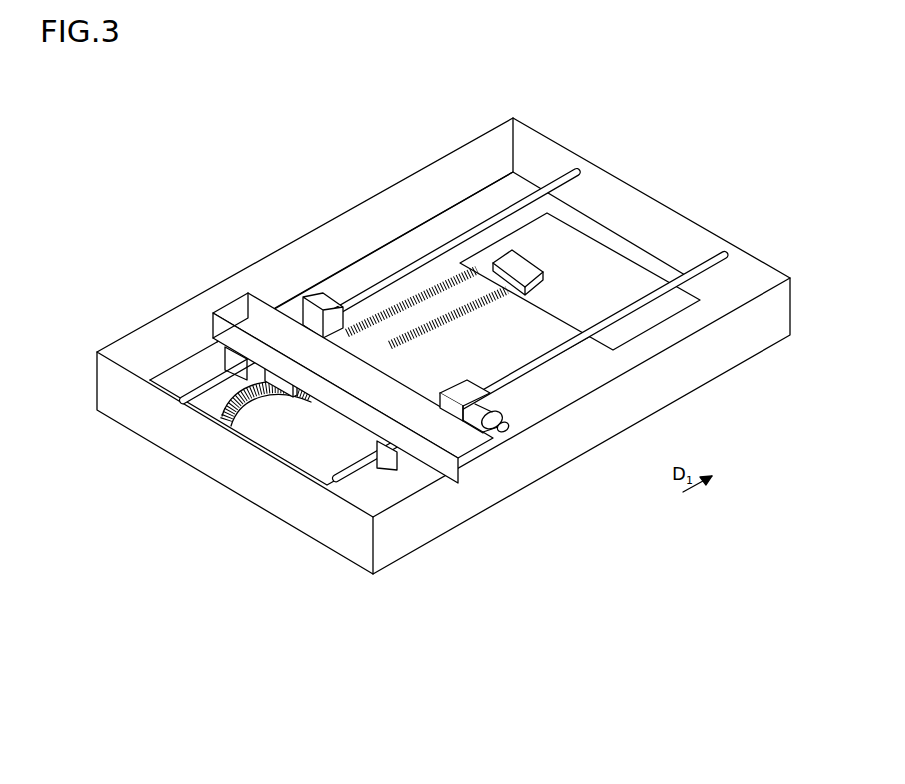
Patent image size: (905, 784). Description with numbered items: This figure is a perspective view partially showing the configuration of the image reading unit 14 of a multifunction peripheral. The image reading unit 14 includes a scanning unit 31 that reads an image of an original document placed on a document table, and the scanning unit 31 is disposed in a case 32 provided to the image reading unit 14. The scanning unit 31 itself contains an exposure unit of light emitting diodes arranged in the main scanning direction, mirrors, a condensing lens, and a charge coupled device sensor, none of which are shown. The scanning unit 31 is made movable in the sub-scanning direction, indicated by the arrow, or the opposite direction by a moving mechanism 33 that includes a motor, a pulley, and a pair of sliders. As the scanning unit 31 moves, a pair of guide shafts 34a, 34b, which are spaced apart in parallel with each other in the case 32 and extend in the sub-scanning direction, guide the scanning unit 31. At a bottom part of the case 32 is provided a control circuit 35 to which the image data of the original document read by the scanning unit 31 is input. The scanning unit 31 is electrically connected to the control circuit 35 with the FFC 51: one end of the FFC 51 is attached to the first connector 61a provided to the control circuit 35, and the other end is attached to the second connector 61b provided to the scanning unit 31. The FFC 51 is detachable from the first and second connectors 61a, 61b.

The image reading unit 14 is at (742, 149).
The scanning unit 31 is at (347, 403).
The case 32 is at (433, 517).
The moving mechanism 33 is at (514, 428).
The guide shaft 34a is at (432, 255).
The guide shaft 34b is at (575, 328).
The control circuit 35 is at (590, 268).
The FFC 51 is at (365, 321).
The first connector 61a is at (518, 260).
The second connector 61b is at (240, 405).